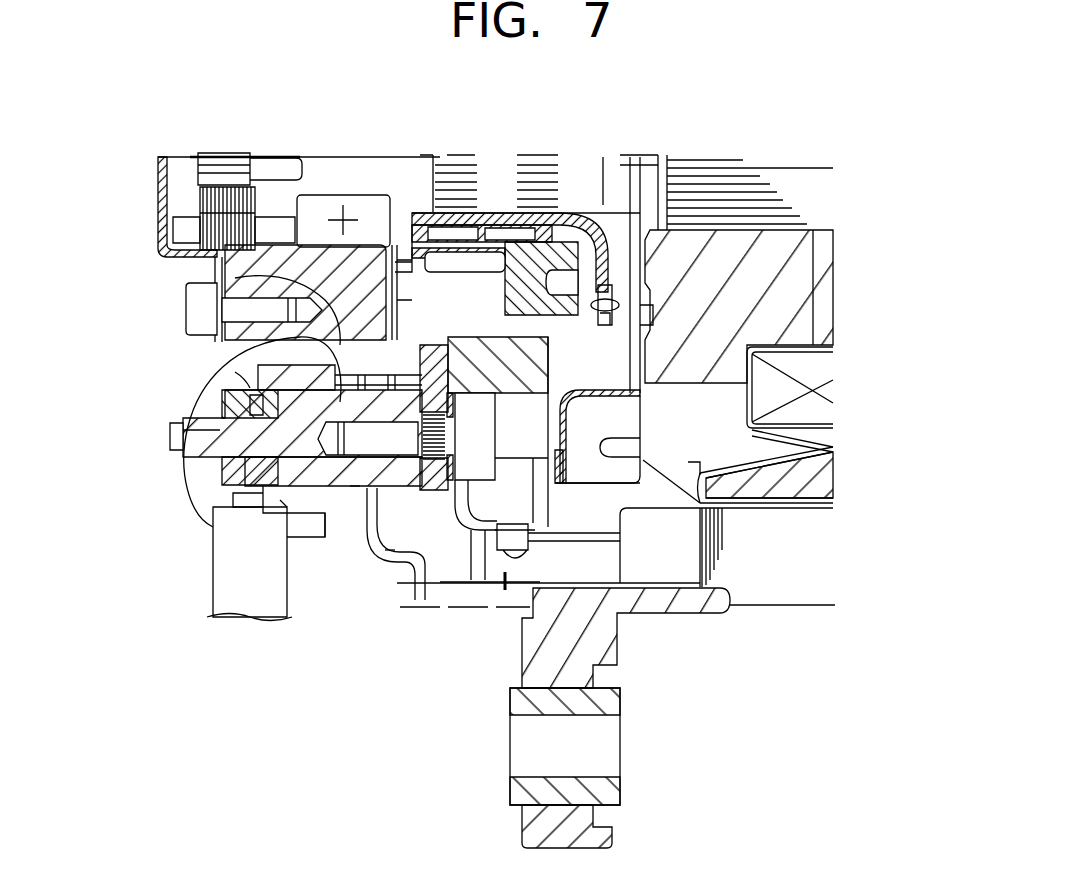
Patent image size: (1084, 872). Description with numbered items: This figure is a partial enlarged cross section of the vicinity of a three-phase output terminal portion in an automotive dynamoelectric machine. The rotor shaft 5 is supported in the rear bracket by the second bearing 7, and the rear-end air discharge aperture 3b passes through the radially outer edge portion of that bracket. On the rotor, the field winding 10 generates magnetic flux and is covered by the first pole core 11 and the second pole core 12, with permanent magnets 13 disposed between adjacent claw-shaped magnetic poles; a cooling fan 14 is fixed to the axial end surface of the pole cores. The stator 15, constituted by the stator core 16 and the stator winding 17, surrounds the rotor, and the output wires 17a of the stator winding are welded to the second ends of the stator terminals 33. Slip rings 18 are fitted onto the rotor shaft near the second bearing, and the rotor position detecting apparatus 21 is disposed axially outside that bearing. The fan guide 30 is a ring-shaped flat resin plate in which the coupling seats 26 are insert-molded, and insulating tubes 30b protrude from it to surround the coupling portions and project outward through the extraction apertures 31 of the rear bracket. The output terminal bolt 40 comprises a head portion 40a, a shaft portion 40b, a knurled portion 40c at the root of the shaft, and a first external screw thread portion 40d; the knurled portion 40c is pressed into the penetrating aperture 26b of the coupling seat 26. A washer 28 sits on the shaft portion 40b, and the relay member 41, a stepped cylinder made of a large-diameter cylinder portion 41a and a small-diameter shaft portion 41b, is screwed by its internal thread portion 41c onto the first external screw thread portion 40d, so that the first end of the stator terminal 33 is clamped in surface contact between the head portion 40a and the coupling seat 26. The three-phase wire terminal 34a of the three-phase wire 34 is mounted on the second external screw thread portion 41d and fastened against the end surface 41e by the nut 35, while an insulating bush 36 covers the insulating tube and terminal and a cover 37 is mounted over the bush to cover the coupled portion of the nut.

The rear-end air discharge aperture 3b is at (450, 608).
The rotor shaft 5 is at (706, 160).
The second bearing 7 is at (325, 195).
The field winding 10 is at (817, 372).
The first pole core 11 is at (840, 302).
The second pole core 12 is at (792, 268).
The permanent magnet 13 is at (808, 477).
The cooling fan 14 is at (608, 390).
The stator 15 is at (748, 670).
The stator core 16 is at (755, 600).
The stator winding 17 is at (687, 575).
The output wire 17a is at (612, 600).
The slip ring 18 is at (445, 240).
The rotor position detecting apparatus 21 is at (238, 152).
The coupling seat 26 is at (427, 338).
The penetrating aperture 26b is at (413, 598).
The washer 28 is at (390, 337).
The fan guide 30 is at (505, 592).
The insulating tube 30b is at (228, 265).
The extraction aperture 31 is at (370, 368).
The stator terminal 33 is at (465, 585).
The three-phase wire 34 is at (208, 553).
The three-phase wire terminal 34a is at (232, 498).
The nut 35 is at (220, 476).
The insulating bush 36 is at (200, 312).
The cover 37 is at (232, 489).
The output terminal bolt 40 is at (473, 393).
The head portion 40a is at (487, 413).
The shaft portion 40b is at (327, 540).
The knurled portion 40c is at (480, 437).
The first external screw thread portion 40d is at (355, 486).
The relay member 41 is at (183, 398).
The large-diameter cylinder portion 41a is at (248, 385).
The small-diameter shaft portion 41b is at (217, 440).
The internal thread portion 41c is at (388, 550).
The second external screw thread portion 41d is at (188, 403).
The end surface 41e is at (285, 505).